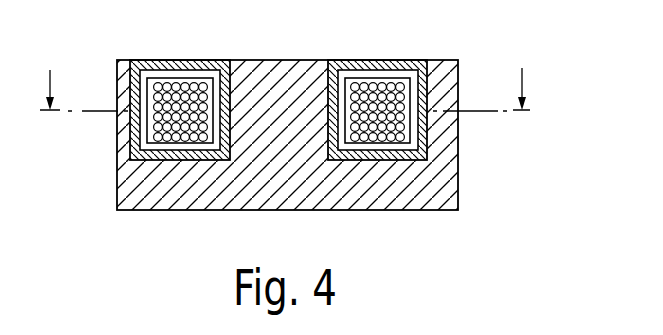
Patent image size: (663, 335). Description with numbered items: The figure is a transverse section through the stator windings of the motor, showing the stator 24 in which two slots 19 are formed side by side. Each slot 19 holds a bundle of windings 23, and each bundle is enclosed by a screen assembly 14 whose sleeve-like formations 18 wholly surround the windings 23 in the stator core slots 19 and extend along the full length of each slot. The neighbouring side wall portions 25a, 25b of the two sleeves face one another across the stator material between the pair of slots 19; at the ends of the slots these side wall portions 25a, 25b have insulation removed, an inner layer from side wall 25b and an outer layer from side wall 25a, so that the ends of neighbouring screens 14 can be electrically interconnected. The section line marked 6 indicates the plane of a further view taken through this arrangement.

The section line 6- 6 is at (285, 105).
The screen assembly 14 is at (388, 54).
The sleeve-like formation 18 is at (418, 62).
The slot 19 is at (117, 60).
The winding 23 is at (398, 95).
The stator 24 is at (387, 188).
The side wall portion 25a is at (231, 156).
The side wall portion 25b is at (330, 151).